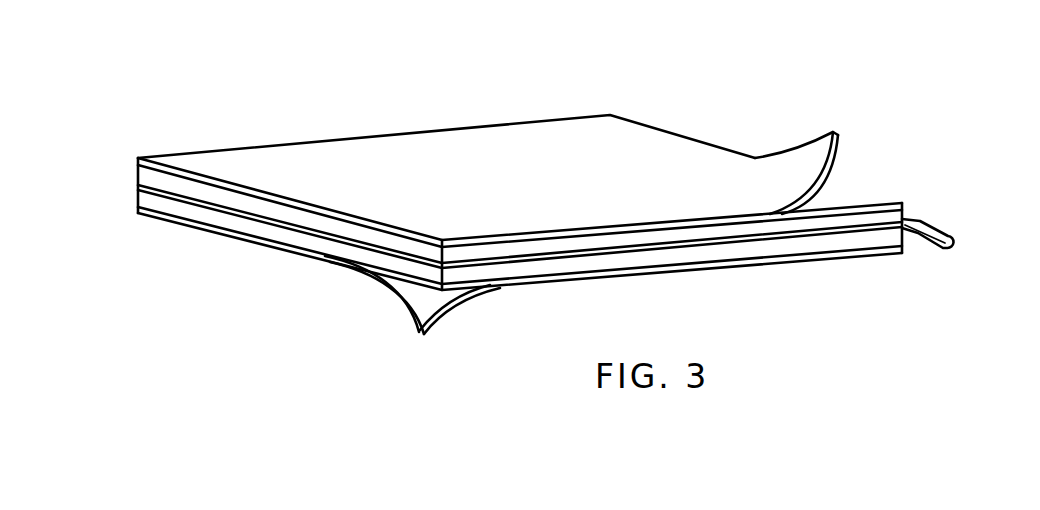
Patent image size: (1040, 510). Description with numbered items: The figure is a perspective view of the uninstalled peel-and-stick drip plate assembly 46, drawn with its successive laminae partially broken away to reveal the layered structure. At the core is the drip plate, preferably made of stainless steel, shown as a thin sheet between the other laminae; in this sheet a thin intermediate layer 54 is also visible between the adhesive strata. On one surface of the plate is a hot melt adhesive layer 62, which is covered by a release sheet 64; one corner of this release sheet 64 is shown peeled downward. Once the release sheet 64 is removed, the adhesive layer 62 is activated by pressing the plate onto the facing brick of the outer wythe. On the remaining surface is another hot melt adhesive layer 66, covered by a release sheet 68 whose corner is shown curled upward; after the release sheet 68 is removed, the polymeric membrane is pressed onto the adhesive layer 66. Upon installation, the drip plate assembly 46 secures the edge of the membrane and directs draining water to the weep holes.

The drip plate assembly 46 is at (845, 185).
The separator layer 54 is at (138, 186).
The hot melt adhesive layer 62 is at (233, 222).
The release sheet 64 is at (413, 305).
The hot melt adhesive layer 66 is at (864, 203).
The release sheet 68 is at (531, 142).